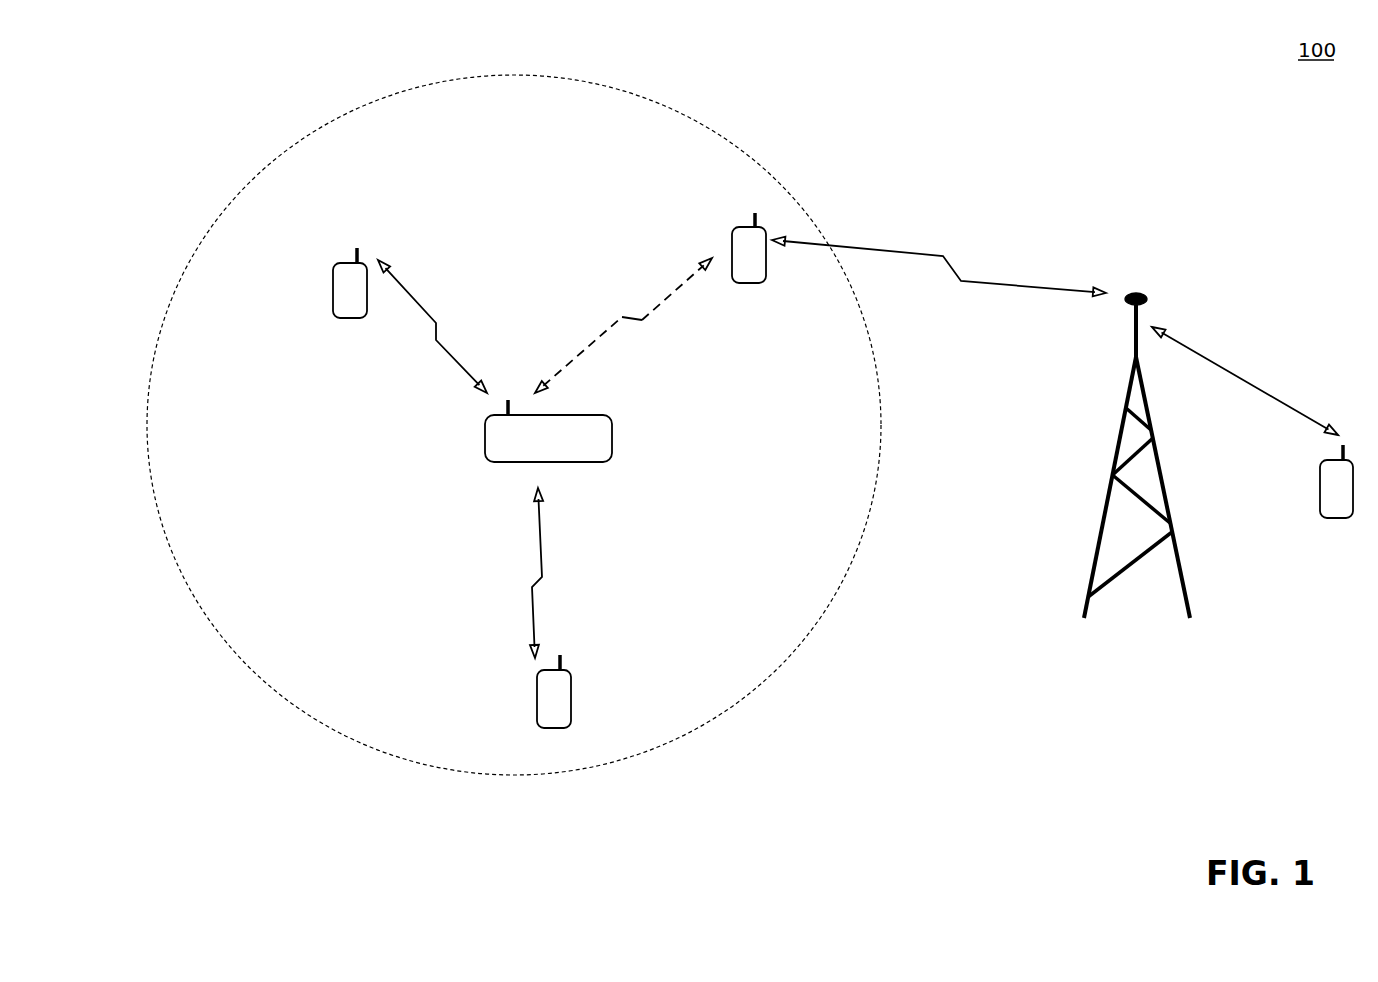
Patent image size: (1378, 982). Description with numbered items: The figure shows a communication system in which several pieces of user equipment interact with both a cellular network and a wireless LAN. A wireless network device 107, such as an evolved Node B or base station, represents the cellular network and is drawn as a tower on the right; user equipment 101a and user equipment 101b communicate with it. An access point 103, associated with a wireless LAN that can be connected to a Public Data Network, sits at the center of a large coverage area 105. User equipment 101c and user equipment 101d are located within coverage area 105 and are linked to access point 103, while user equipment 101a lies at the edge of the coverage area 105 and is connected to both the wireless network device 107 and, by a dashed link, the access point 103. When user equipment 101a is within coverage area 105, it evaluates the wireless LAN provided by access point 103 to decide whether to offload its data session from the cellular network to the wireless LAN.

The user equipment 101a is at (732, 240).
The user equipment 101b is at (1320, 475).
The user equipment 101c is at (333, 278).
The user equipment 101d is at (537, 683).
The access point 103 is at (485, 443).
The coverage area 105 is at (365, 99).
The wireless network device 107 is at (1127, 335).